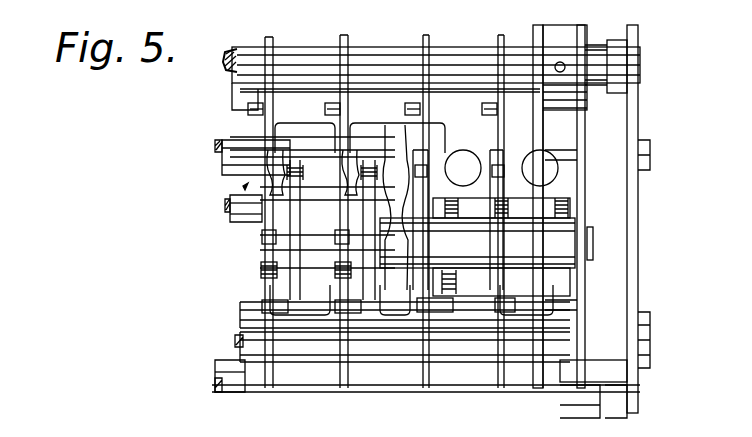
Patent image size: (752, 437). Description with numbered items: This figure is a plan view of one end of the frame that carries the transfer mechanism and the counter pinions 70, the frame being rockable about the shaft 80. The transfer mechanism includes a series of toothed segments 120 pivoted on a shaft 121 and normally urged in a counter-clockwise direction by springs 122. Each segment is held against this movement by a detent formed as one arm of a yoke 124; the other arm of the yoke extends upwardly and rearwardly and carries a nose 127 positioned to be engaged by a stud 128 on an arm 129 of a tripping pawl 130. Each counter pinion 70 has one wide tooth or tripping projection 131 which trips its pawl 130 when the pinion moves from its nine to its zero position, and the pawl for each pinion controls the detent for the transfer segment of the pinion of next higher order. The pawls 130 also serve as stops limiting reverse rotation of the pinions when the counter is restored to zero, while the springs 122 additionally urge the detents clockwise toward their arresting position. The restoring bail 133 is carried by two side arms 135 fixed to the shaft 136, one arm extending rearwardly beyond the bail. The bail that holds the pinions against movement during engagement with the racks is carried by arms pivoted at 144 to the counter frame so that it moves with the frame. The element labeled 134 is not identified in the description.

The shaft 80 is at (440, 50).
The counter pinion 70 is at (505, 180).
The toothed segment 120 is at (278, 272).
The shaft 121 is at (370, 290).
The spring 122 is at (452, 210).
The yoke 124 is at (303, 160).
The nose 127 is at (405, 104).
The stud 128 is at (326, 106).
The arm 129 is at (444, 125).
The tripping pawl 130 is at (423, 170).
The tripping projection 131 is at (431, 170).
The restoring bail 133 is at (253, 222).
The collar 134 is at (278, 244).
The side arm 135 is at (597, 208).
The shaft 136 is at (226, 393).
The pivot 144 is at (246, 190).